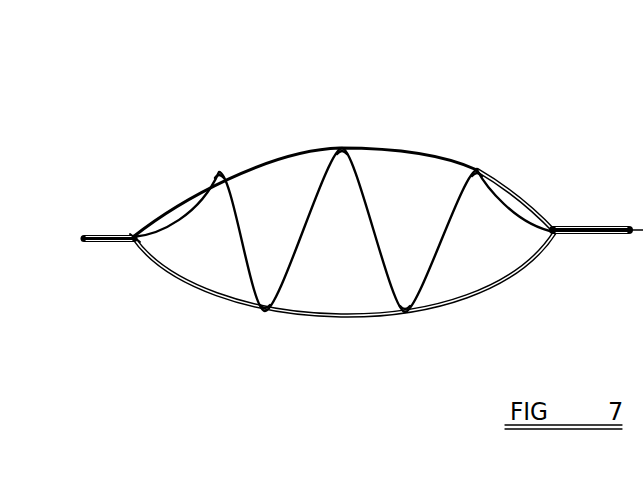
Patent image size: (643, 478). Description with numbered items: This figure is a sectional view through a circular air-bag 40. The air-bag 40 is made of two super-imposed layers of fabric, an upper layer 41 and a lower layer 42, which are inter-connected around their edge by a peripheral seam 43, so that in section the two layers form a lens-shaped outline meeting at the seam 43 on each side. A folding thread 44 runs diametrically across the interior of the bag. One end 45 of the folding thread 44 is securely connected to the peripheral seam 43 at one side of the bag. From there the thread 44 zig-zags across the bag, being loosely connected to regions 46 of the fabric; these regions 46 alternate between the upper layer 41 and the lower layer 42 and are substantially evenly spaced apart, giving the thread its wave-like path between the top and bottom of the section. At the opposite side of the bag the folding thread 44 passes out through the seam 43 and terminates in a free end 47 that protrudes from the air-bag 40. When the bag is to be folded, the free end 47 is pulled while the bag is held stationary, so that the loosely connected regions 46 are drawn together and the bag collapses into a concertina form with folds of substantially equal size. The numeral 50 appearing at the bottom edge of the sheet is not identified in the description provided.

The stent device 40 is at (257, 133).
The upper envelope wire 41 is at (297, 148).
The lower envelope wire 42 is at (465, 300).
The left end rod 43 is at (92, 236).
The zigzag wire 44 is at (242, 250).
The junction point 45 is at (130, 250).
The wire bend apex 46 is at (221, 158).
The right end rod 47 is at (642, 247).
The element 50 is at (426, 477).